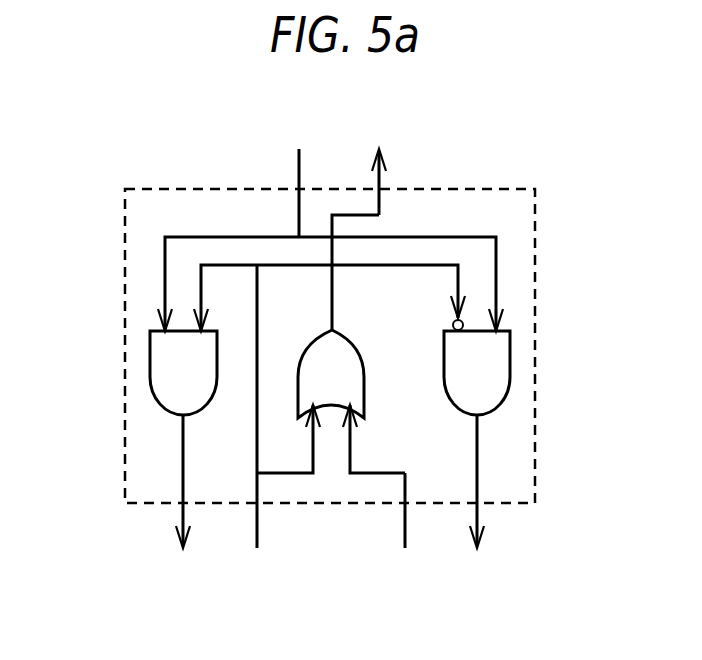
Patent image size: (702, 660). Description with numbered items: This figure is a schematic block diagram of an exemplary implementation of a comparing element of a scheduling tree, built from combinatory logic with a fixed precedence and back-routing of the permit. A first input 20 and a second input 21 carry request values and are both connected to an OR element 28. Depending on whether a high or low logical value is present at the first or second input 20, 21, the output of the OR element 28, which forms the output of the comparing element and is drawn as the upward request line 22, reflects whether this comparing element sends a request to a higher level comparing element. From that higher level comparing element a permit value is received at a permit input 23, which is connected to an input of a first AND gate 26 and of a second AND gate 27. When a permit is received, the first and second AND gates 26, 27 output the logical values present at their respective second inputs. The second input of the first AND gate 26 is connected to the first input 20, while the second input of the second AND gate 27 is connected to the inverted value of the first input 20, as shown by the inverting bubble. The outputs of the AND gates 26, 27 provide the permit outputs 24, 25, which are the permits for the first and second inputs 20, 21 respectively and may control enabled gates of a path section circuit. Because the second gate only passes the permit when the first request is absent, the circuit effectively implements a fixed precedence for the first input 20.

The first input 20 is at (257, 530).
The second input 21 is at (404, 530).
The output line 22 is at (380, 178).
The permit input 23 is at (298, 172).
The permit output 24 is at (176, 532).
The permit output 25 is at (480, 530).
The first AND gate 26 is at (150, 362).
The second AND gate 27 is at (510, 363).
The OR element 28 is at (345, 372).